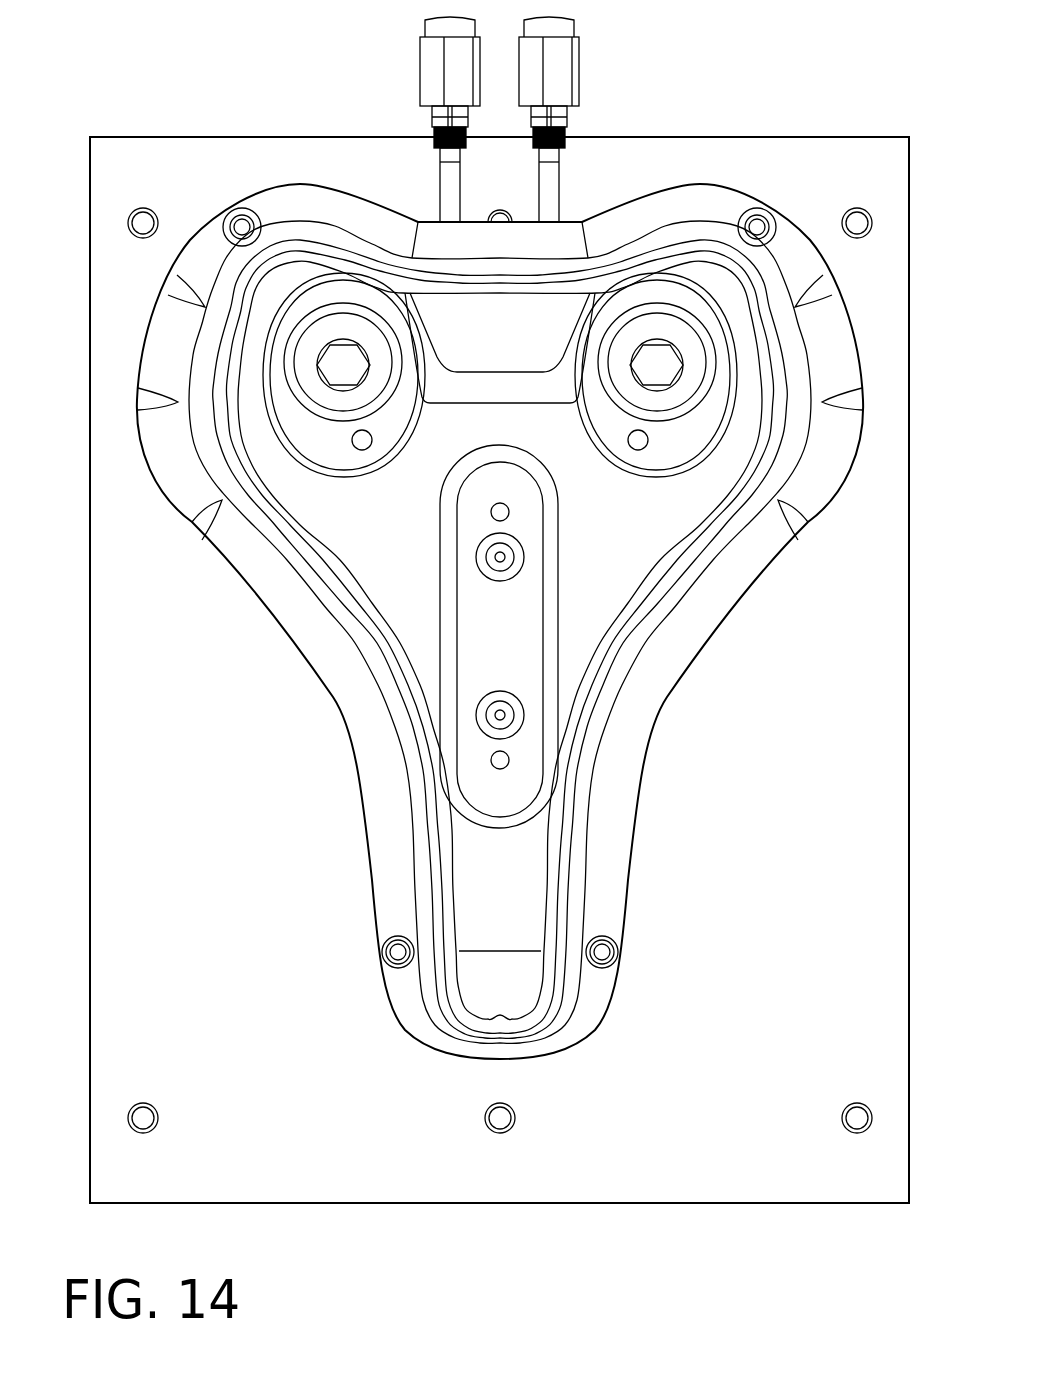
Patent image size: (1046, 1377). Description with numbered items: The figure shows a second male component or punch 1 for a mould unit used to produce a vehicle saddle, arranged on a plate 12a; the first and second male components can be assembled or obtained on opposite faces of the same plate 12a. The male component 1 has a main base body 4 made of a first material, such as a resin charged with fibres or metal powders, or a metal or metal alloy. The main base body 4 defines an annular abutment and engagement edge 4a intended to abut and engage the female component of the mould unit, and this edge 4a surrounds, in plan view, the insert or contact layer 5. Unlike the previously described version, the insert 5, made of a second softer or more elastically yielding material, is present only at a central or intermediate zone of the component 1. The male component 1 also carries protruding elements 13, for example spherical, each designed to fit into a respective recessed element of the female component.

The male component or punch 1 is at (752, 576).
The main base body 4 is at (655, 210).
The abutment and engagement edge 4a is at (838, 350).
The insert or contact layer 5 is at (472, 652).
The plate 12a is at (828, 158).
The protruding elements 13 is at (245, 210).